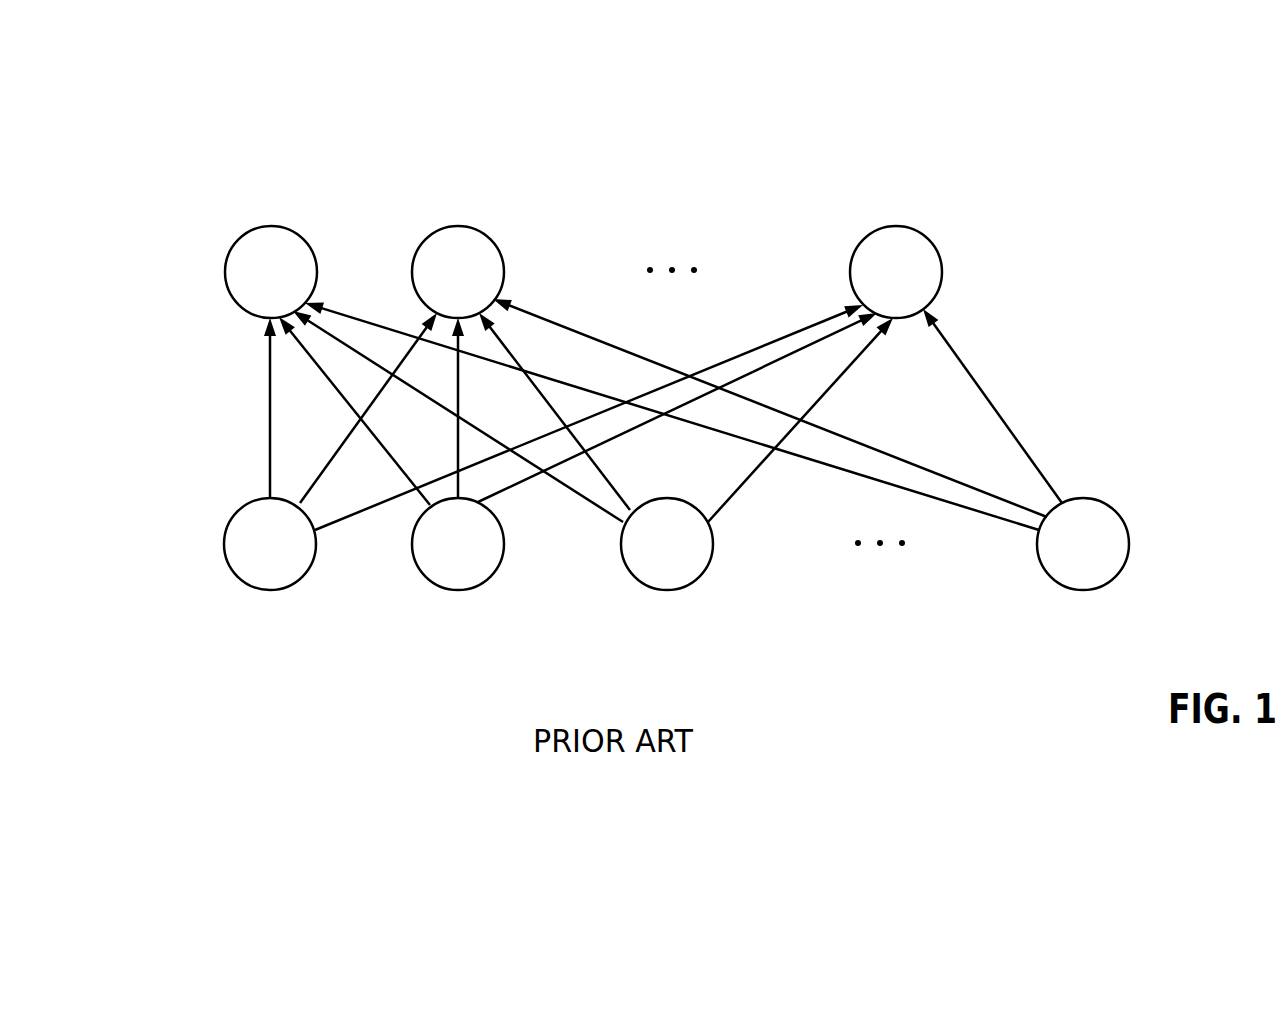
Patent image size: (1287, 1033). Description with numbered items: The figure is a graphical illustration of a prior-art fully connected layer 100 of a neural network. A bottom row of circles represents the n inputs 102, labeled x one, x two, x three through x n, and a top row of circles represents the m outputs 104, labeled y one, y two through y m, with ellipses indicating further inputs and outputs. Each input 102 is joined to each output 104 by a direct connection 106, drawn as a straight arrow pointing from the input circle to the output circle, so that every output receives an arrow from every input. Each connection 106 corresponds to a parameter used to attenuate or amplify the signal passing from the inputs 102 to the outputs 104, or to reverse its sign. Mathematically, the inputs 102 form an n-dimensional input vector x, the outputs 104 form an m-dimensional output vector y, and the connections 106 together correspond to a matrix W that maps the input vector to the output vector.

The fully connected layer 100 is at (176, 108).
The inputs 102 is at (632, 569).
The outputs 104 is at (541, 249).
The connections 106 is at (658, 414).